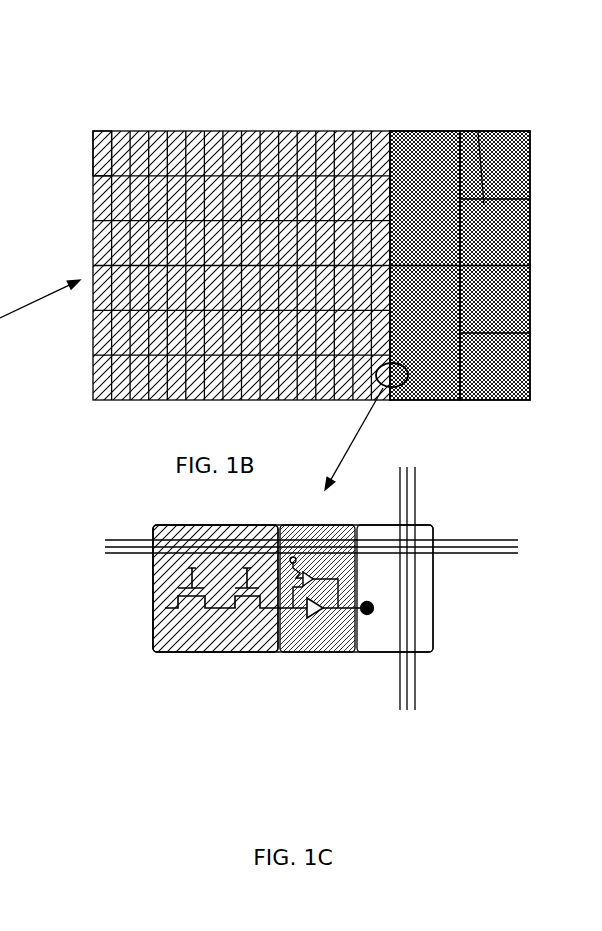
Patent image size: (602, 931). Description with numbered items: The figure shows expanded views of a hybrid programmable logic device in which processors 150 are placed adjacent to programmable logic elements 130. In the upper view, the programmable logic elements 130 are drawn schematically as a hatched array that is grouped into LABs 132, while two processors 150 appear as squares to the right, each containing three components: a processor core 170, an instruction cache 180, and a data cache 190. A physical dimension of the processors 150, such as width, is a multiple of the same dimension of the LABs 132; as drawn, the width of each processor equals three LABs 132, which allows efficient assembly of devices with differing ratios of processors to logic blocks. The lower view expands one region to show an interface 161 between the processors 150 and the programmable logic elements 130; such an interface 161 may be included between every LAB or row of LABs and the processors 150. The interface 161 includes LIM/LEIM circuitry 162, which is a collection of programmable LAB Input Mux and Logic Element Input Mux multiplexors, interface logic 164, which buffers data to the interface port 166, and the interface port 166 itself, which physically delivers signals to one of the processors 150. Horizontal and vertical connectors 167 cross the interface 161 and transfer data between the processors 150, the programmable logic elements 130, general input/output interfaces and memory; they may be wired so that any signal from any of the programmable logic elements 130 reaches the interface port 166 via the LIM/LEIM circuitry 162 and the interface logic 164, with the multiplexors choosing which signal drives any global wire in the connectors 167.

In FIG. 1B, the programmable logic elements 130 is at (241, 249).
In FIG. 1B, the LABs 132 is at (105, 145).
In FIG. 1C, the LABs 132 is at (155, 527).
In FIG. 1B, the processors 150 is at (40, 398).
In FIG. 1B, the processor core 170 is at (407, 131).
In FIG. 1B, the instruction cache 180 is at (478, 131).
In FIG. 1B, the data cache 190 is at (493, 131).
In FIG. 1C, the interface 161 is at (293, 574).
In FIG. 1C, the LIM/LEIM circuitry 162 is at (194, 674).
In FIG. 1C, the interface logic 164 is at (302, 675).
In FIG. 1C, the interface port 166 is at (380, 634).
In FIG. 1C, the horizontal and vertical connectors 167 is at (425, 502).